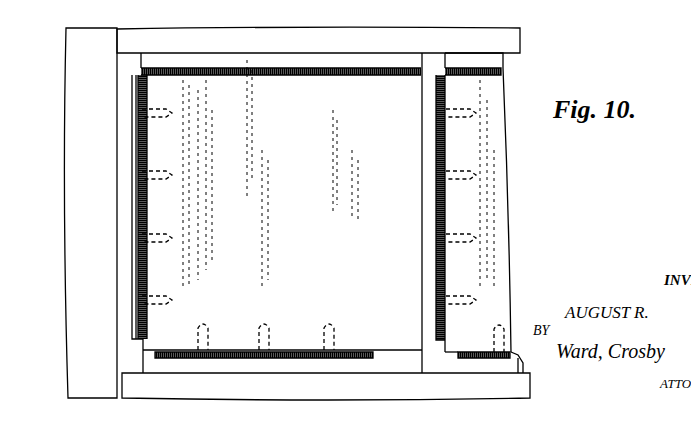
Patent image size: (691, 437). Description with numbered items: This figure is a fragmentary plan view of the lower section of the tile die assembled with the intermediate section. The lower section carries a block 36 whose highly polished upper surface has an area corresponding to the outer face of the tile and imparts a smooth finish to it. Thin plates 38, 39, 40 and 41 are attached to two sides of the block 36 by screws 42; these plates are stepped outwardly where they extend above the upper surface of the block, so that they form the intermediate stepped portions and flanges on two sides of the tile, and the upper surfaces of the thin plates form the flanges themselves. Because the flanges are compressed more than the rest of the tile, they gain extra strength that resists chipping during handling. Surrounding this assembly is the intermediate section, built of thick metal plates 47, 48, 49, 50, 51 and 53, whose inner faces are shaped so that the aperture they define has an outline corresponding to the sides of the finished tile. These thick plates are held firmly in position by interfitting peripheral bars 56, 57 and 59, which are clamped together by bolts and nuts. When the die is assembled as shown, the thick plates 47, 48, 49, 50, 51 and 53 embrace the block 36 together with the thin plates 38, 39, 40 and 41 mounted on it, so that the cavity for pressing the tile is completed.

The peripheral bar 57 is at (200, 33).
The peripheral bar 56 is at (77, 125).
The peripheral bar 59 is at (345, 383).
The thick metal plate 47 is at (124, 158).
The thin plate 38 is at (147, 144).
The thick metal plate 48 is at (282, 60).
The thick metal plate 49 is at (422, 158).
The thick metal plate 51 is at (480, 58).
The thin plate 40 is at (452, 144).
The thick metal plate 53 is at (450, 352).
The thin plate 41 is at (502, 360).
The thick metal plate 50 is at (242, 366).
The thin plate 39 is at (288, 350).
The screws 42 is at (133, 178).
The block 36 is at (188, 258).